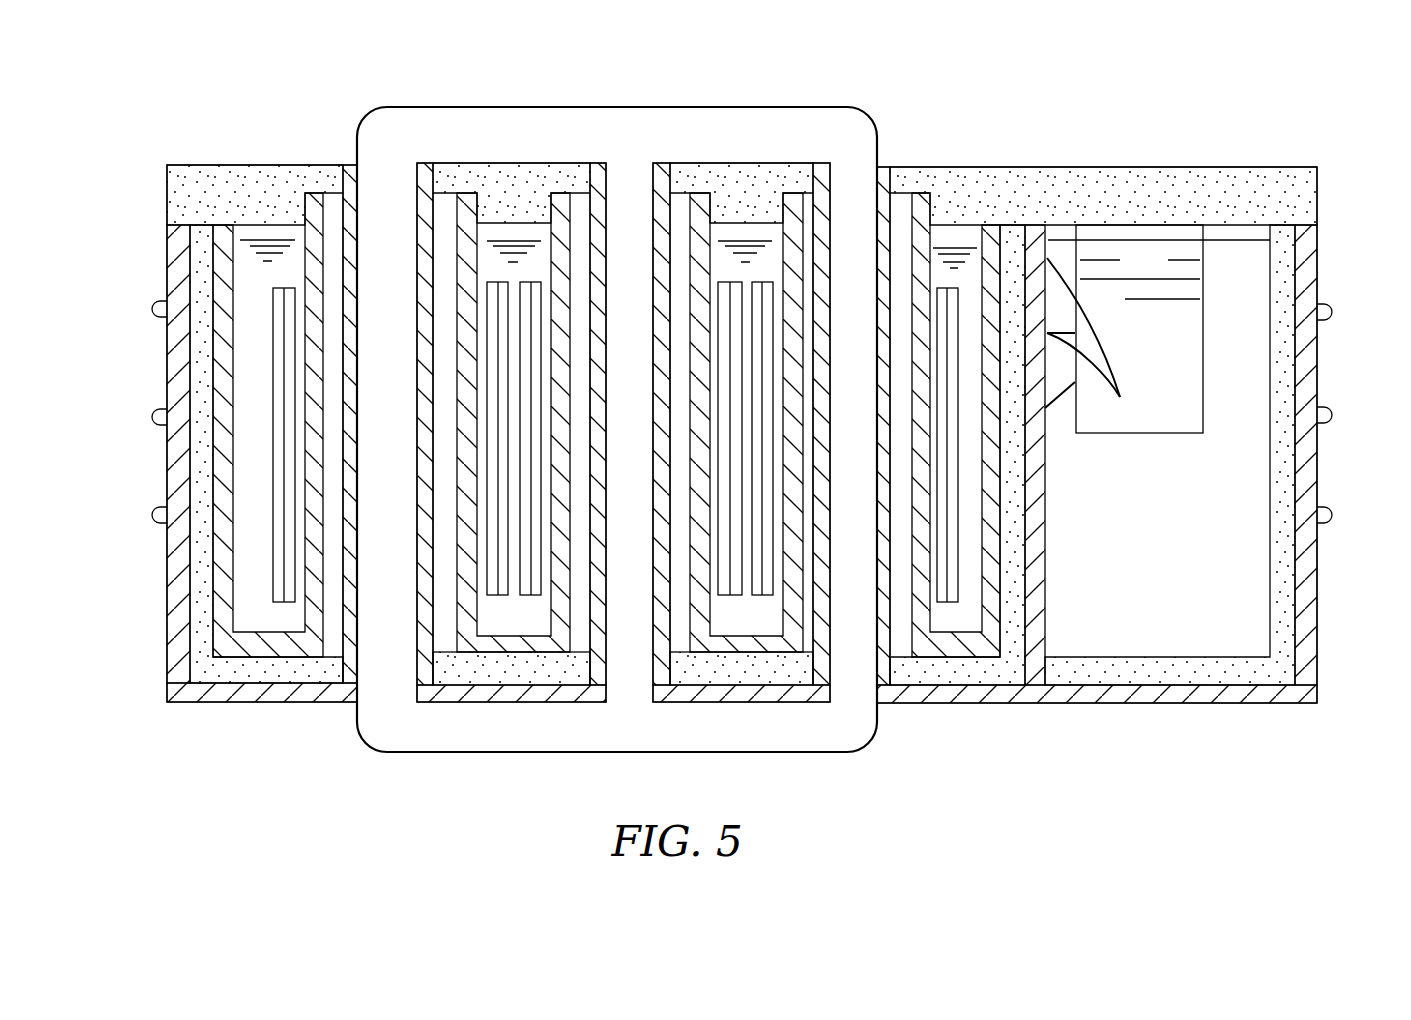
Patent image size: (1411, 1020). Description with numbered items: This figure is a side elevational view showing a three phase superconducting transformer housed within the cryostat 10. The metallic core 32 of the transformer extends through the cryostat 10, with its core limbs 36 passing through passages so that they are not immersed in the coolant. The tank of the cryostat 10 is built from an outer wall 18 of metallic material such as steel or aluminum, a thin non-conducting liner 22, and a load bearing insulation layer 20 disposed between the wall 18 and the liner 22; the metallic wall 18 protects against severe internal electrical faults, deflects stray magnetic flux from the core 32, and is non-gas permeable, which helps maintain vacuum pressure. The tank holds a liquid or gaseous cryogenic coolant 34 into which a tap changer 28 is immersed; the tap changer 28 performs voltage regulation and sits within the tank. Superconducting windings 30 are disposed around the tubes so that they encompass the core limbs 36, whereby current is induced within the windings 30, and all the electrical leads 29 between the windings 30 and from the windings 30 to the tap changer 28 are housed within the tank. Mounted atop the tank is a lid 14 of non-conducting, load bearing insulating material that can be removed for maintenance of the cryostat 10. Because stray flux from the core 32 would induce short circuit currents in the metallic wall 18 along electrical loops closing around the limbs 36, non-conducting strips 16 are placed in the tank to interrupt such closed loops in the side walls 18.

The cryostat 10 is at (193, 98).
The lid 14 is at (910, 170).
The non-conducting strips 16 is at (1333, 515).
The outer wall 18 is at (167, 347).
The load bearing insulation layer 20 is at (210, 650).
The non-conducting liner 22 is at (985, 227).
The tap changer 28 is at (1133, 274).
The electrical leads 29 is at (1060, 393).
The superconducting windings 30 is at (272, 523).
The metallic core 32 is at (639, 148).
The cryogenic coolant 34 is at (236, 300).
The core limbs 36 is at (371, 298).